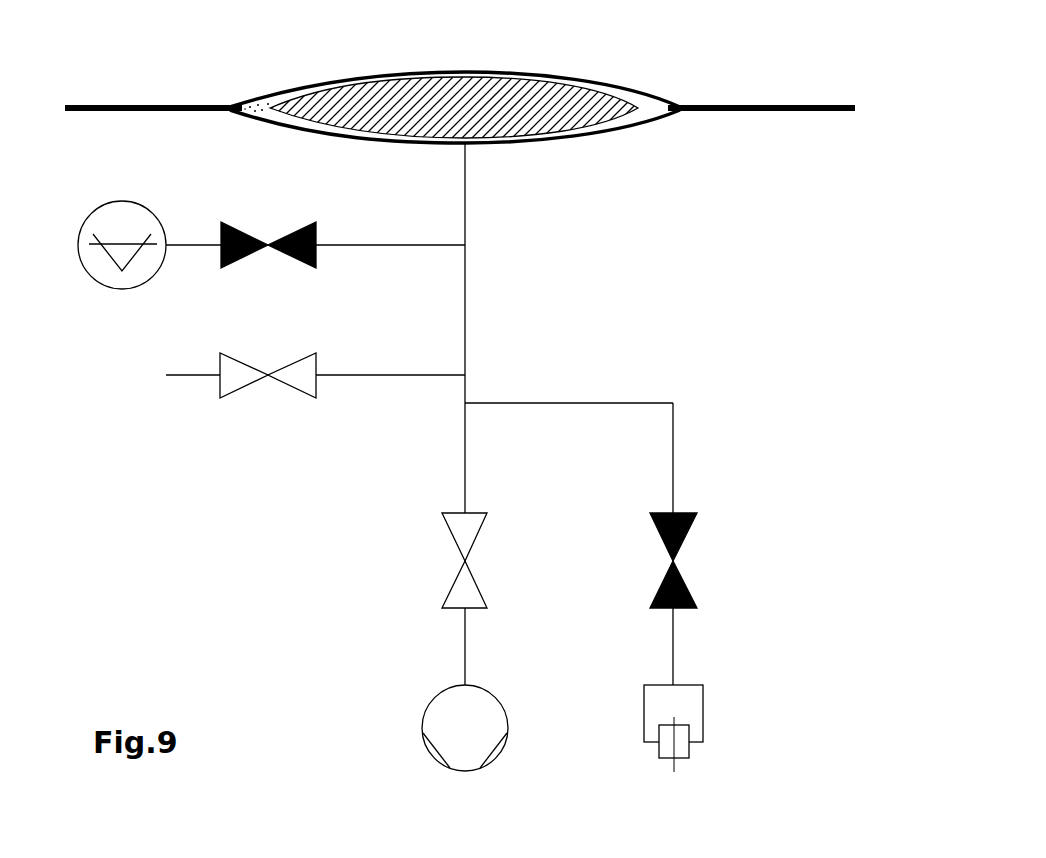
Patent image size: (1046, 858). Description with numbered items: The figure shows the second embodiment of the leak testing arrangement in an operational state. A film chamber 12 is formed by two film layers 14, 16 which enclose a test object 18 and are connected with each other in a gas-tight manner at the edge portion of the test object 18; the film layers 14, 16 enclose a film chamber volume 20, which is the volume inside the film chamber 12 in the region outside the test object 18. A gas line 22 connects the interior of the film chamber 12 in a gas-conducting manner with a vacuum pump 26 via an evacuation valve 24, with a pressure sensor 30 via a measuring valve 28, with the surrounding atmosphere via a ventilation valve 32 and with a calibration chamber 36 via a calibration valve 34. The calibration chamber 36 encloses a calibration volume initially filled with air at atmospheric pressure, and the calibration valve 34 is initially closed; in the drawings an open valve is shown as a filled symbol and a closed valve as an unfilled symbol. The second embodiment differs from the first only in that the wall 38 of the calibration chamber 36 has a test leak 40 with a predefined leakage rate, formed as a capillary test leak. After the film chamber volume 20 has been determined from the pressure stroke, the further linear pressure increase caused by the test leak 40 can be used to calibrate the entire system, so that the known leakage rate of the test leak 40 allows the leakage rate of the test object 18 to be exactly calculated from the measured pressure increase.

The film chamber 12 is at (482, 130).
The film layer 14 is at (645, 100).
The film layer 16 is at (645, 114).
The test object 18 is at (540, 105).
The film chamber volume 20 is at (270, 100).
The gas line 22 is at (465, 185).
The evacuation valve 24 is at (428, 562).
The vacuum pump 26 is at (443, 712).
The measuring valve 28 is at (262, 205).
The pressure sensor 30 is at (108, 212).
The ventilation valve 32 is at (264, 400).
The calibration valve 34 is at (733, 568).
The calibration chamber 36 is at (701, 726).
The wall 38 is at (652, 742).
The test leak 40 is at (680, 764).